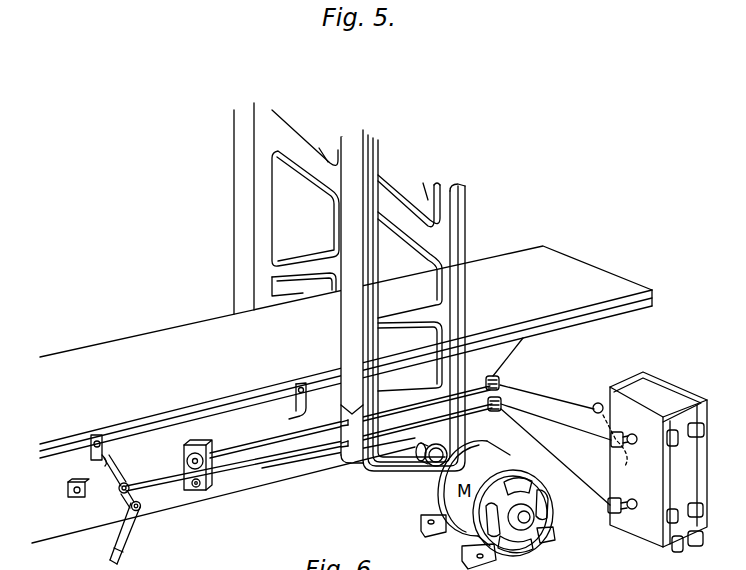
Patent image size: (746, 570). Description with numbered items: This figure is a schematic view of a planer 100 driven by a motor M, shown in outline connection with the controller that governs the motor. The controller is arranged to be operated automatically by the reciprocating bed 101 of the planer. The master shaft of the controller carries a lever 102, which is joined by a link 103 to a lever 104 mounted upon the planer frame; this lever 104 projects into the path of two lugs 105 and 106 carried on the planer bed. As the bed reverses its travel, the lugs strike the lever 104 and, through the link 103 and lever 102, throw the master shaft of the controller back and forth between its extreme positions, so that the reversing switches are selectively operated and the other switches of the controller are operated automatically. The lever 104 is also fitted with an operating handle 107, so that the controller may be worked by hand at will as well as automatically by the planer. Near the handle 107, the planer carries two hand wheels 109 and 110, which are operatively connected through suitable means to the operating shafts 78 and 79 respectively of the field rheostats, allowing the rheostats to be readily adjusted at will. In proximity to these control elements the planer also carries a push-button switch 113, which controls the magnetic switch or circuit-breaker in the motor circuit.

The planer 100 is at (616, 285).
The reciprocating bed 101 is at (553, 333).
The lever 102 is at (598, 404).
The link 103 is at (171, 487).
The lever 104 is at (122, 493).
The lug 105 is at (97, 433).
The lug 106 is at (293, 414).
The operating handle 107 is at (119, 554).
The hand wheel 109 is at (186, 460).
The hand wheel 110 is at (200, 492).
The push-button switch 113 is at (82, 498).
The operating shaft 78 is at (634, 442).
The operating shaft 79 is at (629, 509).